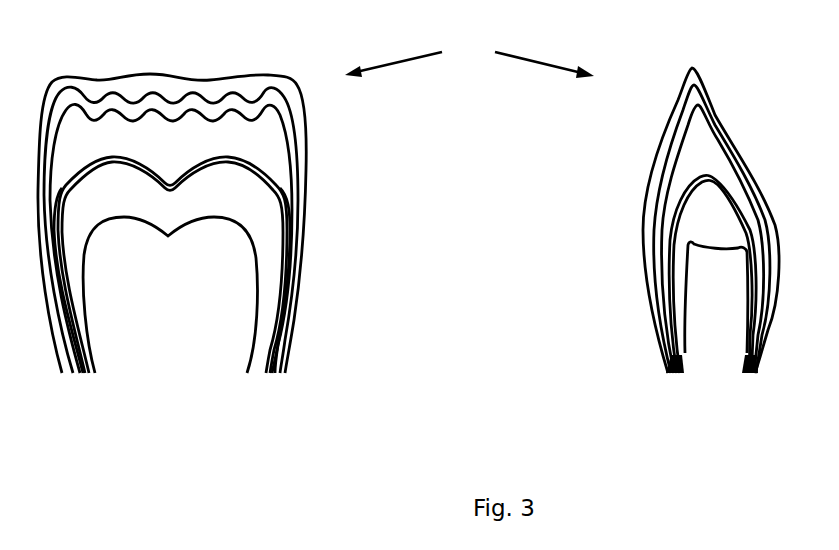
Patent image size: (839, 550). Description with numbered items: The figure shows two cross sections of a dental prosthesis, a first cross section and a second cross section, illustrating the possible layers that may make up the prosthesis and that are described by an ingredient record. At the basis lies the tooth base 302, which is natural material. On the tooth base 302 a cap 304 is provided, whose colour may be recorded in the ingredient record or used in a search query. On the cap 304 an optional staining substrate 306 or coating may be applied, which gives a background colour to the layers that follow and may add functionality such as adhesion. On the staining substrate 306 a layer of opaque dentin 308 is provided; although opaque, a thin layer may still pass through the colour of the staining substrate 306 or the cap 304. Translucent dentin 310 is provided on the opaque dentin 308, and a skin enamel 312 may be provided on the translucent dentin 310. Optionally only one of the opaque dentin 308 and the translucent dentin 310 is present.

The tooth base 302 is at (682, 284).
The cap 304 is at (682, 250).
The staining substrate 306 is at (680, 208).
The opaque dentin 308 is at (687, 170).
The translucent dentin 310 is at (682, 138).
The skin enamel 312 is at (680, 92).